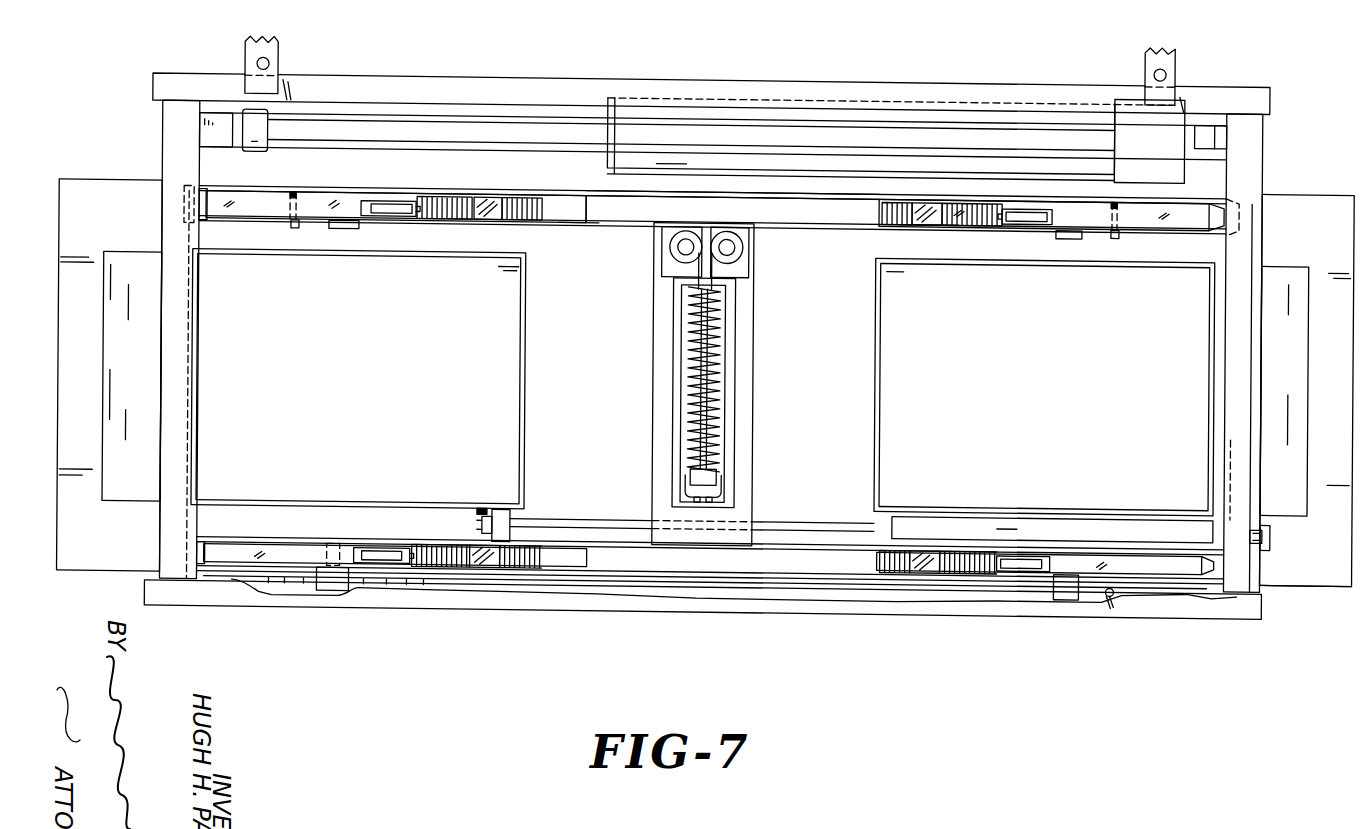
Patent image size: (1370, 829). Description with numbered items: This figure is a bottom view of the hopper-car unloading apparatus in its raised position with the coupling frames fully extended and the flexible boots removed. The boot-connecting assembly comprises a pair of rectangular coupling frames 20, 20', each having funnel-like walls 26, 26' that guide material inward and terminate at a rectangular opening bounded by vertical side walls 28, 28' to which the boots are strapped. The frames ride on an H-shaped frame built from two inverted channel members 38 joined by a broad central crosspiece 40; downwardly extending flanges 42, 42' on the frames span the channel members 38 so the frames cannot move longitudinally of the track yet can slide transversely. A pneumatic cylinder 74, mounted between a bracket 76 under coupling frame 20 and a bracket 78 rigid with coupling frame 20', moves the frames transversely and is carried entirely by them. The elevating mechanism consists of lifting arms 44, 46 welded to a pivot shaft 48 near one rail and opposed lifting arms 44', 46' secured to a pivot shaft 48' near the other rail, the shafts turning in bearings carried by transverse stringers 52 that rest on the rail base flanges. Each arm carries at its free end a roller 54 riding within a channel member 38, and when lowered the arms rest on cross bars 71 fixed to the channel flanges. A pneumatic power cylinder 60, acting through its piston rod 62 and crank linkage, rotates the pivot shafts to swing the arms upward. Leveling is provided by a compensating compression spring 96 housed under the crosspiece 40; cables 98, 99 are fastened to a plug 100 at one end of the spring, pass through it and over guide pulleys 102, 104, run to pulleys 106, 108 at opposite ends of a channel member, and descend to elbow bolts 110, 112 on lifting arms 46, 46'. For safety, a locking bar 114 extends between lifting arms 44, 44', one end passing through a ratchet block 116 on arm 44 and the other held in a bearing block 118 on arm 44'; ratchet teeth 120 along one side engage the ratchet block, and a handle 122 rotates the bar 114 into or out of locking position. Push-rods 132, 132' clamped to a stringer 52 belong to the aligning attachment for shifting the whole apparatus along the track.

The coupling frame 20 is at (110, 355).
The coupling frame 20' is at (1307, 371).
The funnel-like wall 26 is at (114, 376).
The funnel-like wall 26' is at (1307, 391).
The vertical side wall 28 is at (359, 382).
The vertical side wall 28' is at (1044, 386).
The inverted channel member 38 is at (875, 212).
The central crosspiece 40 is at (655, 407).
The downwardly extending flange 42 is at (658, 359).
The downwardly extending flange 42' is at (969, 382).
The lifting arm 44 is at (392, 539).
The lifting arm 44' is at (1045, 528).
The lifting arm 46 is at (385, 190).
The lifting arm 46' is at (1059, 187).
The pivot shaft 48 is at (149, 339).
The pivot shaft 48' is at (1280, 353).
The transverse stringer 52 is at (560, 87).
The roller 54 is at (410, 213).
The pneumatic power cylinder 60 is at (870, 152).
The piston rod 62 is at (545, 142).
The cross bar 71 is at (487, 220).
The pneumatic cylinder 74 is at (930, 530).
The bracket 76 is at (497, 510).
The bracket 78 is at (1273, 547).
The compensating compression spring 96 is at (720, 375).
The cable 98 is at (570, 225).
The cable 99 is at (933, 230).
The plug 100 is at (723, 478).
The guide pulley 102 is at (678, 242).
The guide pulley 104 is at (740, 242).
The pulley 106 is at (353, 228).
The pulley 108 is at (1075, 240).
The elbow bolt 110 is at (297, 228).
The elbow bolt 112 is at (1113, 238).
The locking bar 114 is at (702, 583).
The ratchet block 116 is at (337, 597).
The bearing block 118 is at (1080, 603).
The ratchet teeth 120 is at (430, 580).
The handle 122 is at (1113, 598).
The push-rod 132 is at (295, 63).
The push-rod 132' is at (1191, 69).